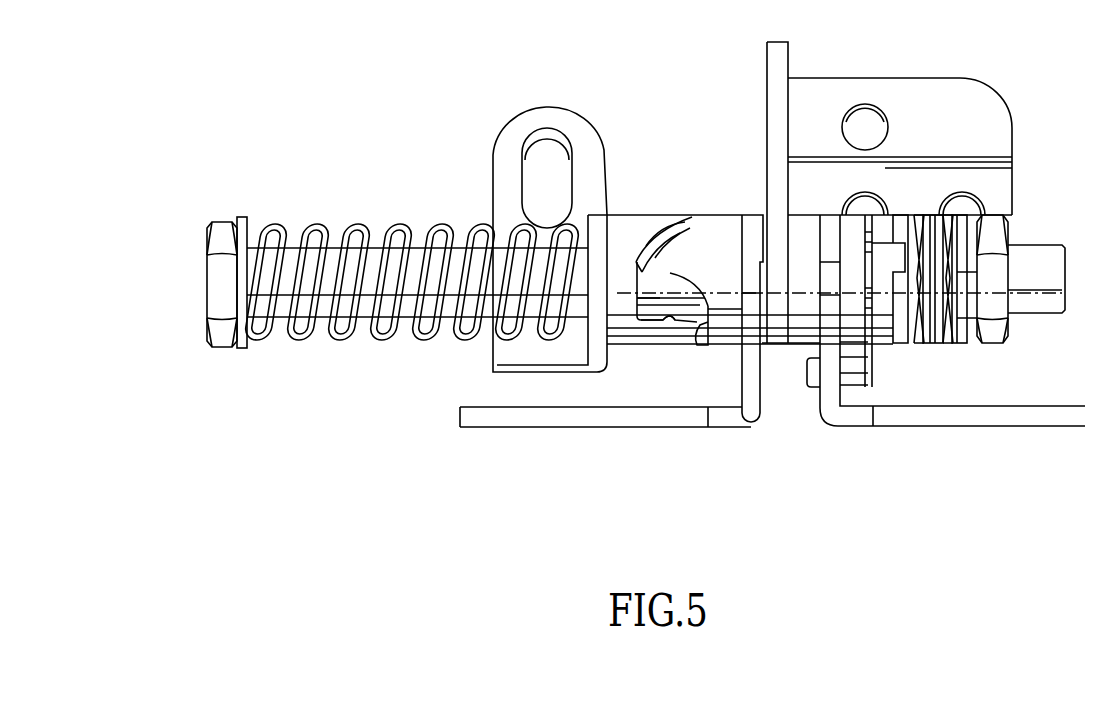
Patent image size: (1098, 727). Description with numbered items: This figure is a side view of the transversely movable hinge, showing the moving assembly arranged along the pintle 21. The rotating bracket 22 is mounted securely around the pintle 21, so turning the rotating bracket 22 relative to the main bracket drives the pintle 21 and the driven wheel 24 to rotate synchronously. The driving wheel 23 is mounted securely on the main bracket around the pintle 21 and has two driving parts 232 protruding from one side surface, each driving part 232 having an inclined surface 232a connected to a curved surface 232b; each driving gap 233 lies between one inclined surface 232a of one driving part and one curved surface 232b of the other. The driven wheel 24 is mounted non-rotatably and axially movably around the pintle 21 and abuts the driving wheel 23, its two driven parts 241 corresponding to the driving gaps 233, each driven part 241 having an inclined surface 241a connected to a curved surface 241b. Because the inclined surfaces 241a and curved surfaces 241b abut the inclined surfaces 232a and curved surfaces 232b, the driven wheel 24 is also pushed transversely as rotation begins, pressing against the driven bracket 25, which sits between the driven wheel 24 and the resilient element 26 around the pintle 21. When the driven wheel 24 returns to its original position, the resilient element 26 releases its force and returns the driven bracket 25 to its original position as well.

The pintle 21 is at (387, 257).
The rotating bracket 22 is at (957, 92).
The driving wheel 23 is at (705, 220).
The driven wheel 24 is at (637, 223).
The driven bracket 25 is at (510, 353).
The resilient element 26 is at (293, 332).
The driving part 232 is at (708, 306).
The inclined surface 232a is at (653, 297).
The curved surface 232b is at (653, 225).
The driving gap 233 is at (698, 338).
The driven part 241 is at (648, 322).
The inclined surface 241a is at (680, 323).
The curved surface 241b is at (658, 227).